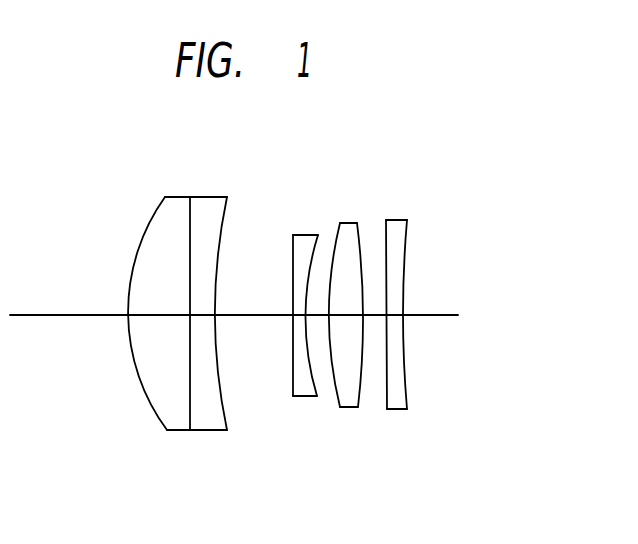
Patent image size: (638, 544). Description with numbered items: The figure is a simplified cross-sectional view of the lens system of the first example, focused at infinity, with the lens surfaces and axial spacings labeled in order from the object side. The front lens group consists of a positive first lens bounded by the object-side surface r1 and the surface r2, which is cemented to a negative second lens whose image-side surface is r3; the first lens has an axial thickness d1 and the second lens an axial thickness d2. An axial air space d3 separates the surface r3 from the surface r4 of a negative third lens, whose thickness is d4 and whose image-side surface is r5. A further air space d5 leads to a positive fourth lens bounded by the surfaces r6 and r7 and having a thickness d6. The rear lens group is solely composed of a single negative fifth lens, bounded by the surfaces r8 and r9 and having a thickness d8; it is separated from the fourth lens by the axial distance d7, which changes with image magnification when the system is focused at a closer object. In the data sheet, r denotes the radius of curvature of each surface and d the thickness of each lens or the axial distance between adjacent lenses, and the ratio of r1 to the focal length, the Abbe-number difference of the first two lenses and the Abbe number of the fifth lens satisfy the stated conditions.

The radius of curvature of first lens surface r1 is at (165, 197).
The radius of curvature of second lens surface r2 is at (190, 197).
The radius of curvature of third lens surface r3 is at (227, 222).
The radius of curvature of fourth lens surface r4 is at (293, 235).
The radius of curvature of fifth lens surface r5 is at (318, 235).
The radius of curvature of sixth lens surface r6 is at (340, 223).
The radius of curvature of seventh lens surface r7 is at (357, 223).
The radius of curvature of eighth lens surface r8 is at (386, 220).
The radius of curvature of ninth lens surface r9 is at (407, 220).
The thickness of first lens d1 is at (158, 315).
The thickness of second lens d2 is at (200, 315).
The axial distance between second and third lenses d3 is at (250, 315).
The thickness of third lens d4 is at (296, 315).
The axial distance between third and fourth lenses d5 is at (309, 315).
The thickness of fourth lens d6 is at (335, 315).
The axial distance between front and rear lens groups d7 is at (372, 315).
The thickness of fifth lens d8 is at (392, 315).